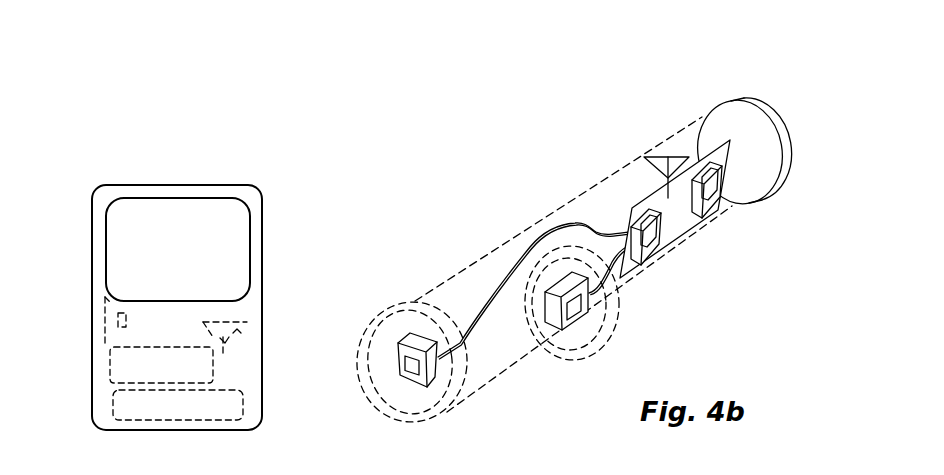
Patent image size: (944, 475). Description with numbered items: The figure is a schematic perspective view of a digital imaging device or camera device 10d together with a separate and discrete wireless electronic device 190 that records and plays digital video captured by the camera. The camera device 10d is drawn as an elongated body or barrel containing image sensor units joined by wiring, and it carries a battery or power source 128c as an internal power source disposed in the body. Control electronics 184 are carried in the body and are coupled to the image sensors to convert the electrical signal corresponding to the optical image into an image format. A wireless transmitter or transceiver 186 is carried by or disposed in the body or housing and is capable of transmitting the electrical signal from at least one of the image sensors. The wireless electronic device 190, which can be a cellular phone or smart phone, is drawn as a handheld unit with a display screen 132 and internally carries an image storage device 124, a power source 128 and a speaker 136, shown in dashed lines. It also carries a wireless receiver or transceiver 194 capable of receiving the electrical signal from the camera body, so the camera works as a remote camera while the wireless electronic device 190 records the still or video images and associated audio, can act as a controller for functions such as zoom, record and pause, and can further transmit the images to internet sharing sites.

The camera device 10d is at (583, 215).
The battery or power source 128c is at (787, 140).
The control electronics 184 is at (675, 218).
The wireless transmitter or transceiver 186 is at (657, 153).
The wireless electronic device 190 is at (292, 261).
The display screen 132 is at (210, 253).
The speaker 136 is at (105, 300).
The wireless receiver or transceiver 194 is at (243, 326).
The image storage device 124 is at (120, 365).
The power source 128 is at (243, 405).